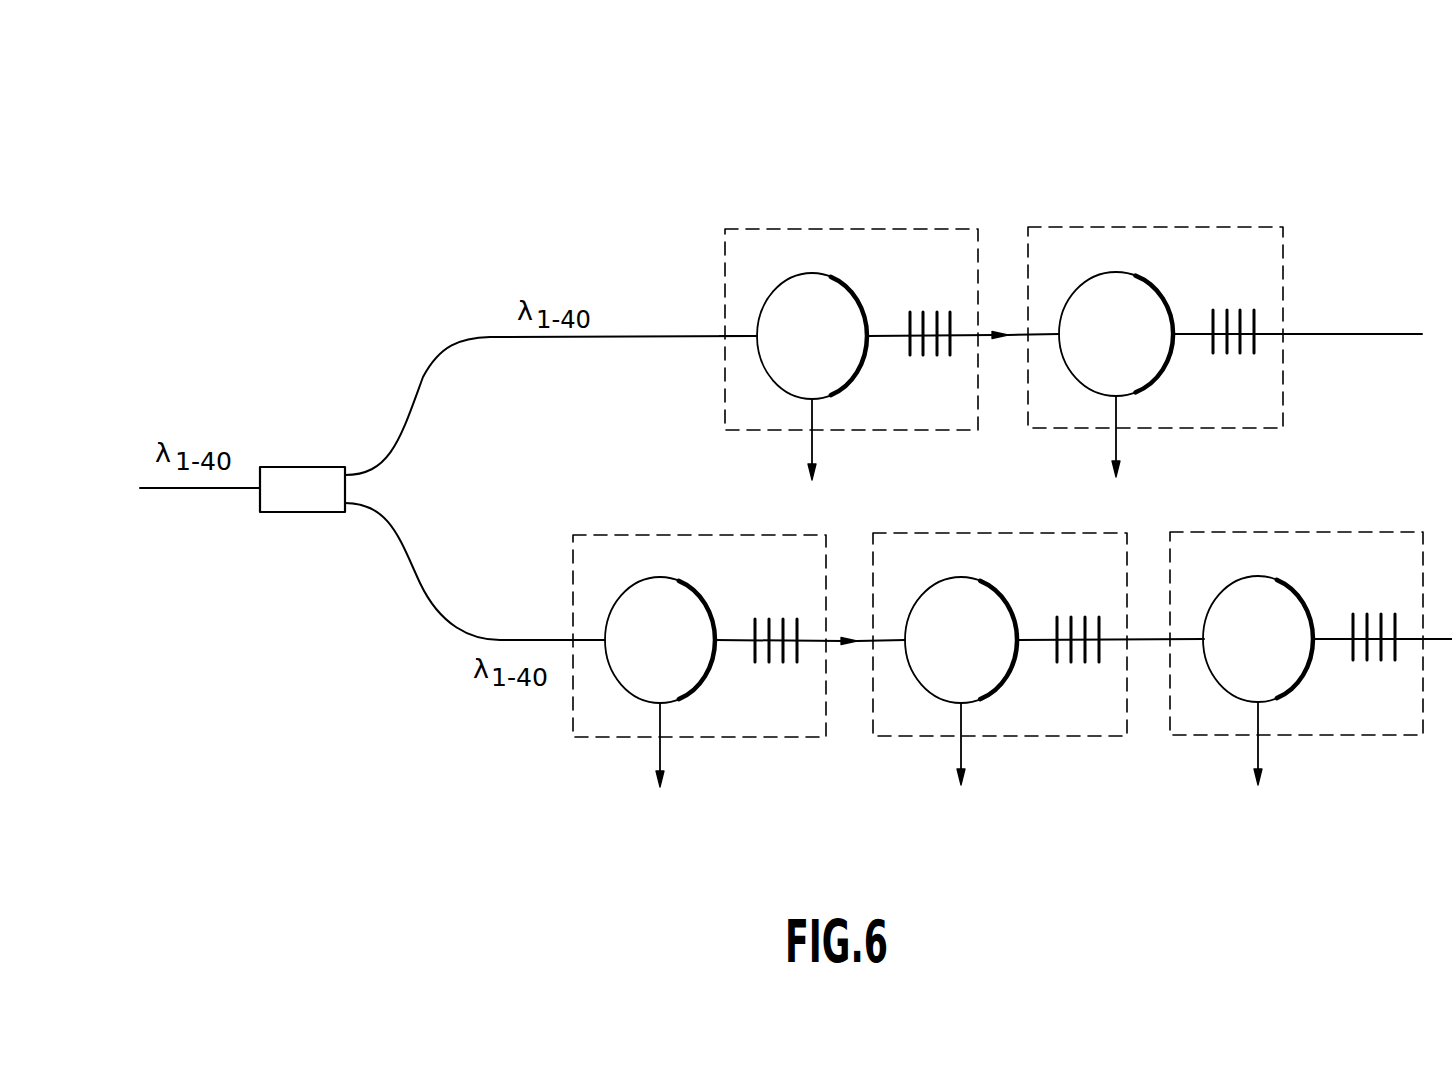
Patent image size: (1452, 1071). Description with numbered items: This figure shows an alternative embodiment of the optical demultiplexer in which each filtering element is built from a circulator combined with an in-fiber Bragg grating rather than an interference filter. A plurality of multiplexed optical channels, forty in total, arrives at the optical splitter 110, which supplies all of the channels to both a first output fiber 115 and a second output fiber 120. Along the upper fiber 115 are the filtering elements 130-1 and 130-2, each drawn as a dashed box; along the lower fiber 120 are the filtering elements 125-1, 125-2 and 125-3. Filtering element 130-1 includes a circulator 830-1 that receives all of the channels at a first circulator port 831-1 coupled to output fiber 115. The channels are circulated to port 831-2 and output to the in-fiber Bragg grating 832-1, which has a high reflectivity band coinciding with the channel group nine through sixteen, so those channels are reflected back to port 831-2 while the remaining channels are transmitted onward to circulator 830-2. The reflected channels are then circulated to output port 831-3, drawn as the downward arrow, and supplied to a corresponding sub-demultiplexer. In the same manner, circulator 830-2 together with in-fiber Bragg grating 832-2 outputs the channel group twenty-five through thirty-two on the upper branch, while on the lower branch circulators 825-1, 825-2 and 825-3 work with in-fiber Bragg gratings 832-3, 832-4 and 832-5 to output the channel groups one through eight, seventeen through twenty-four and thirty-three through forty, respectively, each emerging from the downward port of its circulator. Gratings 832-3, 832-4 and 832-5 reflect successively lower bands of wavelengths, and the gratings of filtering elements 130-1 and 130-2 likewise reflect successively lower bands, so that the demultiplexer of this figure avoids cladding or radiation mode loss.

The optical splitter 110 is at (305, 467).
The output fiber 115 is at (476, 340).
The output fiber 120 is at (415, 590).
The filtering element 130-1 is at (838, 229).
The filtering element 130-2 is at (1198, 222).
The filtering element 125-1 is at (575, 705).
The filtering element 125-2 is at (915, 737).
The filtering element 125-3 is at (1210, 737).
The circulator 830-1 is at (857, 293).
The circulator 830-2 is at (1117, 272).
The first circulator port 831-1 is at (757, 332).
The circulator port 831-2 is at (870, 328).
The output port 831-3 is at (812, 398).
The in-fiber Bragg grating 832-1 is at (933, 358).
The in-fiber Bragg grating 832-2 is at (1233, 357).
The in-fiber Bragg grating 832-3 is at (778, 663).
The in-fiber Bragg grating 832-4 is at (1078, 662).
The in-fiber Bragg grating 832-5 is at (1377, 660).
The circulator 825-1 is at (643, 578).
The circulator 825-2 is at (944, 578).
The circulator 825-3 is at (1258, 575).